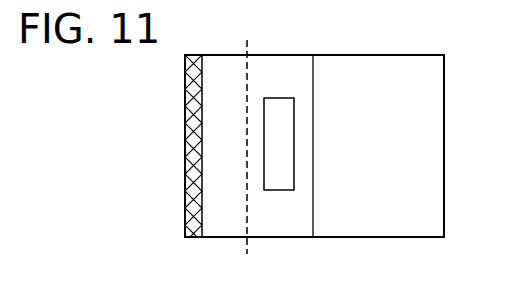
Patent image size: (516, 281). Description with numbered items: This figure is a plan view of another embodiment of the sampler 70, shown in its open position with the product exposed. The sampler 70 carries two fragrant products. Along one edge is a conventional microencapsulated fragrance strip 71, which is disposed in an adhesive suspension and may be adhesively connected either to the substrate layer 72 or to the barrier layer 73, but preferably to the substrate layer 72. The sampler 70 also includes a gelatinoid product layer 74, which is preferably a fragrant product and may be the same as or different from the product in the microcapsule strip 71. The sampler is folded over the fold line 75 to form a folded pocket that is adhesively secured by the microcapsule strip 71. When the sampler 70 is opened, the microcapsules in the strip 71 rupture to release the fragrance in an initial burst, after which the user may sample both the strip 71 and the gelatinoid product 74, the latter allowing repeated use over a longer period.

The sampler 70 is at (404, 54).
The microencapsulated fragrance strip 71 is at (191, 238).
The substrate layer 72 is at (426, 113).
The barrier layer 73 is at (303, 224).
The gelatinoid product layer 74 is at (281, 104).
The fold line 75 is at (250, 256).